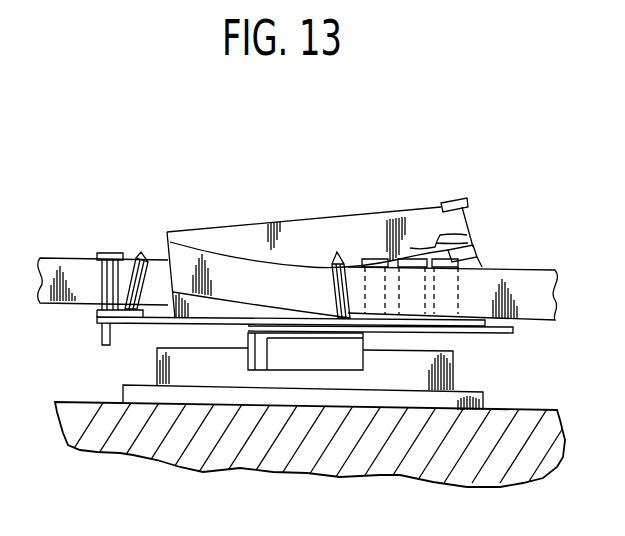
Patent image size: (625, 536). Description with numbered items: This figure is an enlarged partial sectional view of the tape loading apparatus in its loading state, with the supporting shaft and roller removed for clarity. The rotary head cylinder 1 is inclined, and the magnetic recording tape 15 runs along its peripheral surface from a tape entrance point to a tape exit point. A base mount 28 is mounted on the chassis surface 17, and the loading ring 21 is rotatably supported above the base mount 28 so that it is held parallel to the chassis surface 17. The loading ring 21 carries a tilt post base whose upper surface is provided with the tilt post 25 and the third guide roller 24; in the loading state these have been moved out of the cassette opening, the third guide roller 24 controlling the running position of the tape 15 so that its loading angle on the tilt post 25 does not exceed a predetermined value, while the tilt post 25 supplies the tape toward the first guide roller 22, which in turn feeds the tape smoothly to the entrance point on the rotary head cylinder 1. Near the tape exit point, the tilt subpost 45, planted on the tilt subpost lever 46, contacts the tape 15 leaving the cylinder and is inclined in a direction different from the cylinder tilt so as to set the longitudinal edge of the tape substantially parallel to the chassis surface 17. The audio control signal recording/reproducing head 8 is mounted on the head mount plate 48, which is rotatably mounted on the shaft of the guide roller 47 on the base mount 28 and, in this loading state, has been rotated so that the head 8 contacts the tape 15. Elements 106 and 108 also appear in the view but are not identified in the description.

The rotary head cylinder 1 is at (228, 231).
The audio control signal recording/reproducing head 8 is at (467, 231).
The magnetic recording tape 15 is at (525, 268).
The chassis surface 17 is at (540, 410).
The loading ring 21 is at (127, 326).
The first guide roller 22 is at (450, 202).
The third guide roller 24 is at (108, 253).
The tilt post 25 is at (148, 252).
The base mount 28 is at (450, 380).
The tilt subpost 45 is at (337, 252).
The tilt subpost lever 46 is at (353, 333).
The guide roller 47 is at (383, 258).
The head mount plate 48 is at (508, 333).
The clamp 106 is at (102, 335).
The shim 108 is at (247, 313).